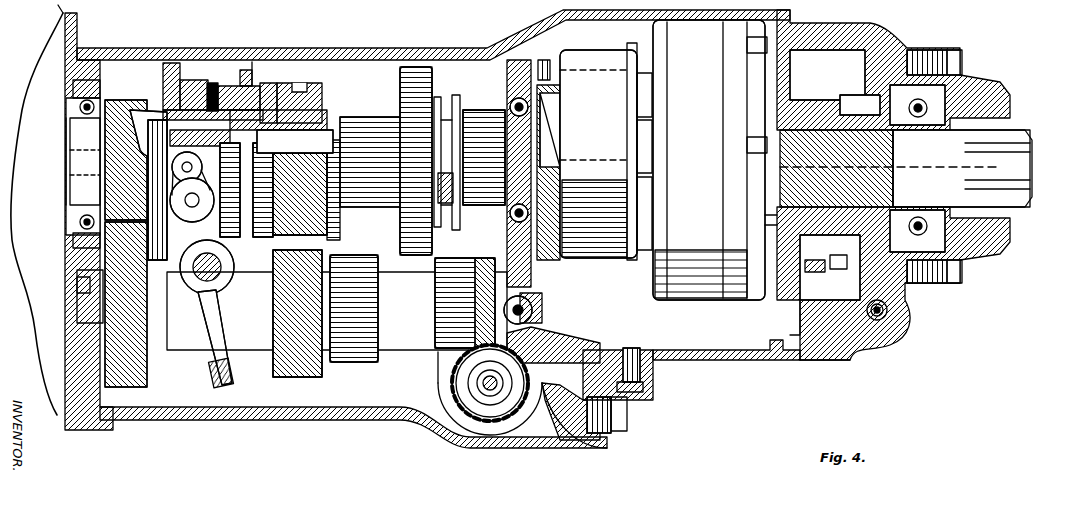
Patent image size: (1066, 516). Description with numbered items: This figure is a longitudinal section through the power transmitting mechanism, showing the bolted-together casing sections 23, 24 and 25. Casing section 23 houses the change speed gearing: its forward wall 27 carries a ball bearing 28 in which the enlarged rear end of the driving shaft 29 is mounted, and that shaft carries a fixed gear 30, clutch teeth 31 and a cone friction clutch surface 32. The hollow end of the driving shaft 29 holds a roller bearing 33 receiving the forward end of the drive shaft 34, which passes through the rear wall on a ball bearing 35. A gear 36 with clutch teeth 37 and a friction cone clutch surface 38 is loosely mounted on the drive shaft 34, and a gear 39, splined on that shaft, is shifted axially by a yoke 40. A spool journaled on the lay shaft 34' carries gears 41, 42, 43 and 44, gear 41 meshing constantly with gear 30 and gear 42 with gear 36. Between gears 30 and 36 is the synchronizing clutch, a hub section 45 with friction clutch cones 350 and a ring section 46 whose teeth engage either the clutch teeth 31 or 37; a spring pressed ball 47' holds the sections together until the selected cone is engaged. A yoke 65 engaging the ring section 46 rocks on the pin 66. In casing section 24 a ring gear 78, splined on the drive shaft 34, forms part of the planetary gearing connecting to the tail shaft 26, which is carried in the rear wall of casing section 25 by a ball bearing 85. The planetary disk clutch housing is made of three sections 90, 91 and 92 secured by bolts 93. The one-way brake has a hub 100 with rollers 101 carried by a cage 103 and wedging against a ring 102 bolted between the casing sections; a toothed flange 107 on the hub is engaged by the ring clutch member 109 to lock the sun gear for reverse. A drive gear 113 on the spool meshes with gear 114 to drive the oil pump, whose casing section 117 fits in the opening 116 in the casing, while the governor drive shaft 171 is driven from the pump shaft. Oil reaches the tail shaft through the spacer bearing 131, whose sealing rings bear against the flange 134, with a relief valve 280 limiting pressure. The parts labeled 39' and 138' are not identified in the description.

The casing section 23 is at (112, 50).
The casing section 24 is at (716, 361).
The casing section 25 is at (853, 351).
The tail shaft 26 is at (932, 152).
The forward wall 27 is at (98, 84).
The ball bearing 28 is at (96, 103).
The driving shaft 29 is at (91, 139).
The gear 30 is at (70, 155).
The clutch teeth 31 is at (168, 63).
The cone friction clutch surface 32 is at (184, 79).
The roller bearing 33 is at (133, 100).
The drive shaft 34 is at (484, 154).
The lay shaft 34' is at (546, 315).
The ball bearing 35 is at (512, 105).
The gear 36 is at (296, 86).
The clutch teeth 37 is at (267, 83).
The friction cone clutch surface 38 is at (251, 62).
The gear 39 is at (418, 139).
The retainer 39' is at (65, 288).
The yoke 40 is at (456, 218).
The gear 41 is at (147, 358).
The gear 42 is at (295, 378).
The gear 43 is at (368, 362).
The gear 44 is at (432, 346).
The hub section 45 is at (262, 141).
The ring section 46 is at (213, 83).
The spring pressed ball 47' is at (240, 57).
The yoke 65 is at (208, 374).
The pin 66 is at (222, 272).
The ring gear 78 is at (605, 270).
The ball bearing 85 is at (948, 100).
The clutch housing section 90 is at (660, 300).
The clutch housing section 91 is at (693, 300).
The clutch housing section 92 is at (730, 300).
The bolts 93 is at (755, 290).
The hub 100 is at (853, 97).
The rollers 101 is at (777, 230).
The ring 102 is at (803, 307).
The cage 103 is at (773, 220).
The flange 107 is at (847, 257).
The ring clutch member 109 is at (822, 287).
The drive gear 113 is at (540, 290).
The gear 114 is at (472, 400).
The opening 116 is at (560, 420).
The pump casing section 117 is at (446, 378).
The spacer bearing 131 is at (877, 108).
The flange 134 is at (877, 232).
The bolt 138' is at (618, 361).
The drive shaft 171 is at (488, 388).
The relief valve 280 is at (894, 327).
The friction clutch cones 350 is at (200, 85).